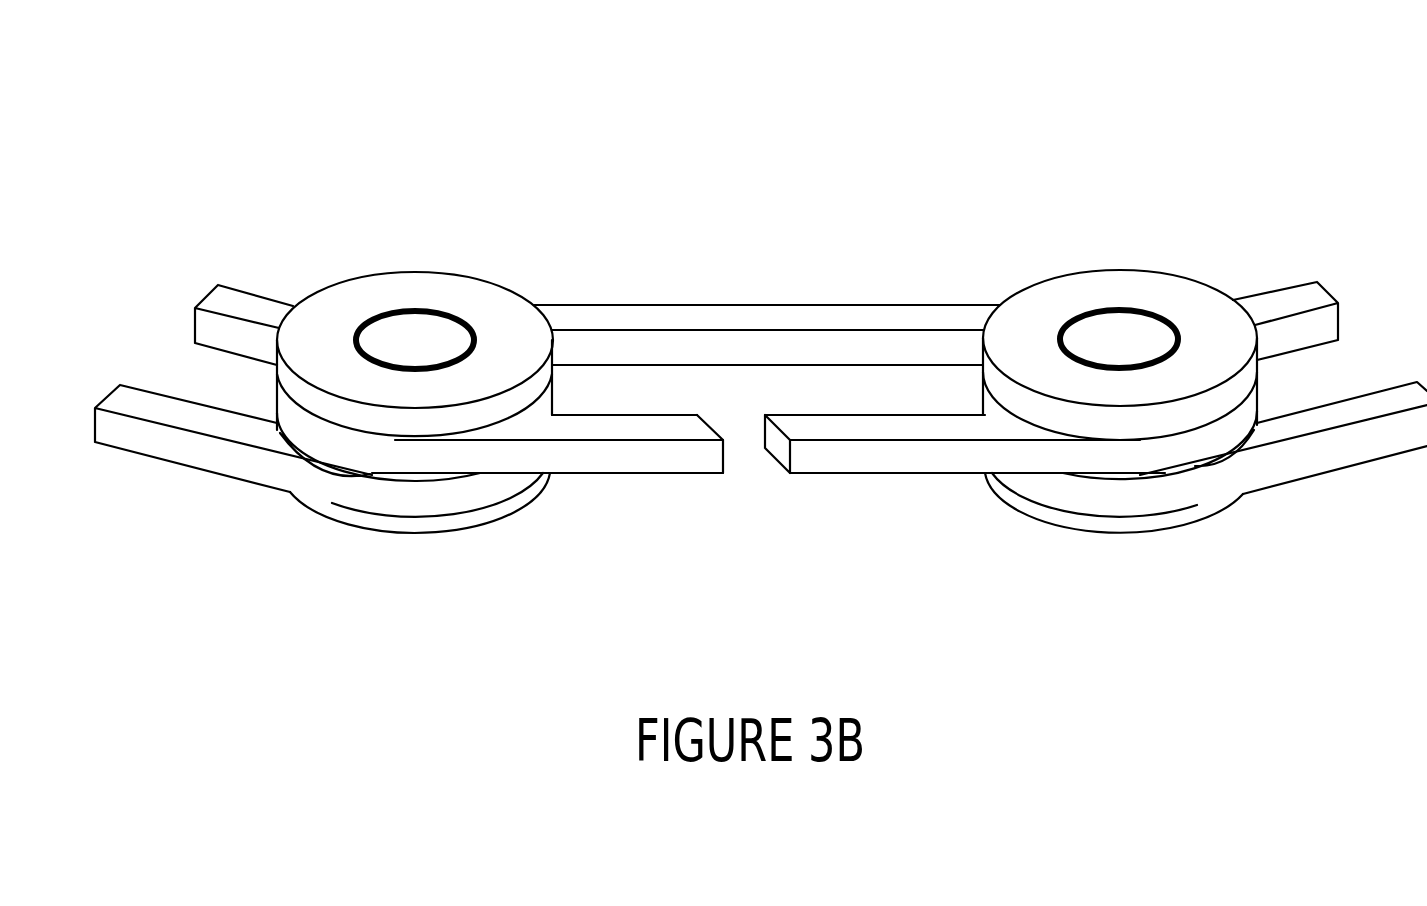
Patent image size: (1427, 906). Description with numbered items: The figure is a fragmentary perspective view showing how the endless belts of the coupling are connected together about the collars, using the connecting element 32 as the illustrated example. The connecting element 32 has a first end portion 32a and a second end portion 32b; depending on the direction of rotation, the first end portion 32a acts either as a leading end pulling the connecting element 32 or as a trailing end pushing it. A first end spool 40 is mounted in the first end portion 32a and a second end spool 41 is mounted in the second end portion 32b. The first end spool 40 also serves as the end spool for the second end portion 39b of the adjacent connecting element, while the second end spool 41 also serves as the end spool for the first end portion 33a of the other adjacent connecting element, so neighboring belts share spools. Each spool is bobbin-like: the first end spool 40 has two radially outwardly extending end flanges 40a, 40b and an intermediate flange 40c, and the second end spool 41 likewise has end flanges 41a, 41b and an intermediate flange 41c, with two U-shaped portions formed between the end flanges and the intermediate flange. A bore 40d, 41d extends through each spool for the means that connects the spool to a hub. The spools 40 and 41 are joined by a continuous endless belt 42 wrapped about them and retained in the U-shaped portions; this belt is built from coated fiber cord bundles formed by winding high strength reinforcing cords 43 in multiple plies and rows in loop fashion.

The connecting element 32 is at (787, 268).
The first end portion 32a is at (603, 327).
The second end portion 32b is at (968, 320).
The first end portion 33a is at (1327, 453).
The second end portion 39b is at (192, 457).
The first end spool 40 is at (343, 300).
The end flange 40a is at (397, 298).
The end flange 40b is at (421, 522).
The intermediate flange 40c is at (375, 472).
The bore 40d is at (422, 347).
The second end spool 41 is at (1120, 278).
The end flange 41a is at (1200, 332).
The end flange 41b is at (1185, 513).
The intermediate flange 41c is at (1097, 490).
The bore 41d is at (1140, 345).
The endless belt 42 is at (663, 352).
The reinforcing cords 43 is at (780, 440).